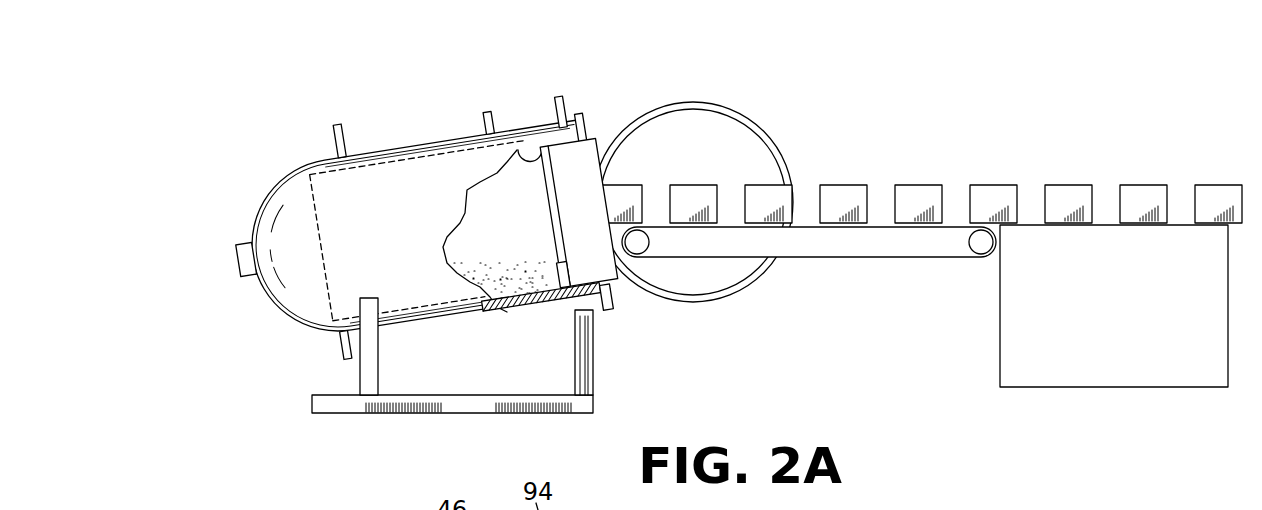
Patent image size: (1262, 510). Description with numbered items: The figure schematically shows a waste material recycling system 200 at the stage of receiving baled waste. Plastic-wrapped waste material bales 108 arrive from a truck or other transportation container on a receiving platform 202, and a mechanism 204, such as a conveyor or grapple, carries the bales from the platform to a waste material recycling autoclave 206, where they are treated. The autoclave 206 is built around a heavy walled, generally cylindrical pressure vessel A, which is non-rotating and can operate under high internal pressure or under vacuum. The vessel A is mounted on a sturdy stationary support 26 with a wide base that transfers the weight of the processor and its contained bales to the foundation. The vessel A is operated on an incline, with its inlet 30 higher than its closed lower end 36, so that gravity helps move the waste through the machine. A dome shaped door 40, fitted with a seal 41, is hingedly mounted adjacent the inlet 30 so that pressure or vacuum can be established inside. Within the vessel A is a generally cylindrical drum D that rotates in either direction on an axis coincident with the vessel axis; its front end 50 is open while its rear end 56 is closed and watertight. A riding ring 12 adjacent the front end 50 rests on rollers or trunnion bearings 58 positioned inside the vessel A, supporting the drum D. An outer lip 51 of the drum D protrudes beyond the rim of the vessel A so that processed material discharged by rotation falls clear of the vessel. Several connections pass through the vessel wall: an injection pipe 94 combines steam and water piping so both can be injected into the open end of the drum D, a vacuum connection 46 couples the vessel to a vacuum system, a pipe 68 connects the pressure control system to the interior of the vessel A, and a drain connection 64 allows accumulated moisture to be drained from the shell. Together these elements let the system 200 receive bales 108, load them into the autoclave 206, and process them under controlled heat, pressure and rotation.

The waste material recycling system 200 is at (893, 79).
The receiving platform 202 is at (1092, 318).
The mechanism 204 is at (793, 262).
The waste material recycling autoclave 206 is at (267, 115).
The plastic-wrapped waste material bales 108 is at (702, 186).
The riding ring 12 is at (516, 150).
The closed lower end 36 is at (290, 302).
The vacuum connection 46 is at (487, 112).
The pipe 68 is at (338, 123).
The injection pipe 94 is at (561, 96).
The rear end 56 is at (313, 203).
The trunnion bearings 58 is at (541, 312).
The front end 50 is at (600, 142).
The outer lip 51 is at (625, 284).
The inlet 30 is at (597, 310).
The stationary support 26 is at (593, 386).
The drain connection 64 is at (340, 350).
The dome shaped door 40 is at (755, 162).
The seal 41 is at (740, 107).
The pressure vessel A is at (434, 142).
The drum D is at (590, 160).